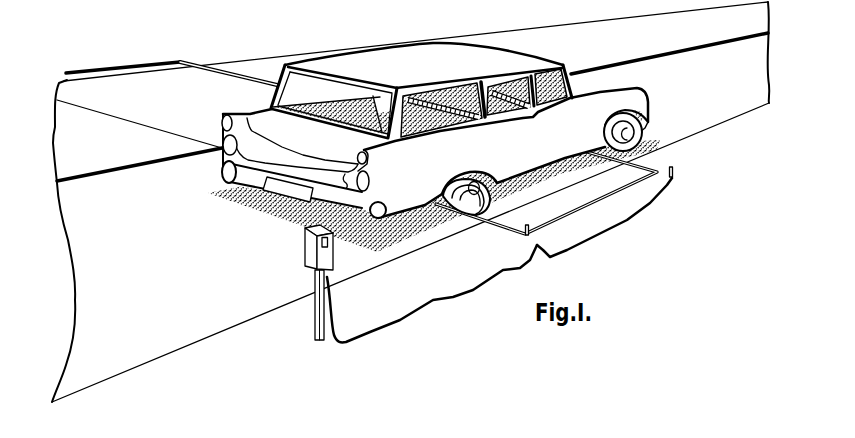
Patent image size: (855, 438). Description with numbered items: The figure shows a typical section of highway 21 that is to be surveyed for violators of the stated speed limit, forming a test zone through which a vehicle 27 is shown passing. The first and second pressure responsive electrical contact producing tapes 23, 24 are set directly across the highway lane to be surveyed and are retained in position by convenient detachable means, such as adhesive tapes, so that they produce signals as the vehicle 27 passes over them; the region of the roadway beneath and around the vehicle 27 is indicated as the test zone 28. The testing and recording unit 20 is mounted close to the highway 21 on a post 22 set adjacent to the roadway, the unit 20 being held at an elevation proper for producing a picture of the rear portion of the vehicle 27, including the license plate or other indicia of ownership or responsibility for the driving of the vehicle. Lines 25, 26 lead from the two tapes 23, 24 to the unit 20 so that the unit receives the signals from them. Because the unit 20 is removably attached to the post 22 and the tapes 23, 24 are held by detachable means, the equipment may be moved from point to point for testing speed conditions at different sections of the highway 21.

The testing and recording unit 20 is at (304, 260).
The highway 21 is at (165, 315).
The post 22 is at (318, 318).
The first pressure responsive electrical contact producing tape 23 is at (478, 216).
The second pressure responsive electrical contact producing tape 24 is at (668, 165).
The line 25 is at (450, 299).
The line 26 is at (603, 232).
The vehicle 27 is at (212, 169).
The detection zone 28 is at (272, 214).